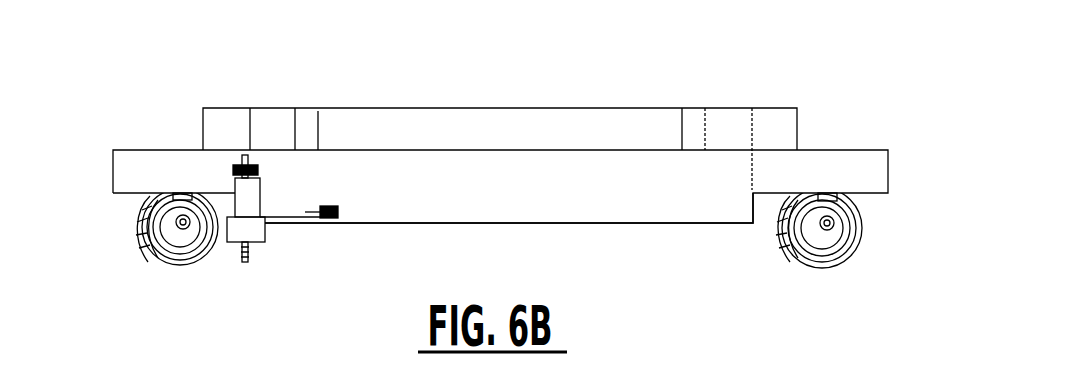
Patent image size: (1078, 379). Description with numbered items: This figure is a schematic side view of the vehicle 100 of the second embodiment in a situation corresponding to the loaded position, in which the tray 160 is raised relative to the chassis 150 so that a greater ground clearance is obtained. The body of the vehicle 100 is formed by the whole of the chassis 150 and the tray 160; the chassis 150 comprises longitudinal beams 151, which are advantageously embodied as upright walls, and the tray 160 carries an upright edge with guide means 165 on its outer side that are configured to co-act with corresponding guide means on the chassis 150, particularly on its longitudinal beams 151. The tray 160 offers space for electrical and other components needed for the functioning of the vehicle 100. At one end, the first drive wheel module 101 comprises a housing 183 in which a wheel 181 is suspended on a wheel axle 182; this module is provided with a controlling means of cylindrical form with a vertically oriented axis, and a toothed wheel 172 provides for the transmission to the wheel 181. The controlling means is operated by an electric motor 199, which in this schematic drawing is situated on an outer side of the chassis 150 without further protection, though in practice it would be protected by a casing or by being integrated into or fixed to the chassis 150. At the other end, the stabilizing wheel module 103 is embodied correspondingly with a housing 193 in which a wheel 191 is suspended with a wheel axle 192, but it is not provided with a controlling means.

The vehicle 100 is at (112, 112).
The first drive wheel module 101 is at (165, 271).
The stabilizing wheel module 103 is at (851, 206).
The chassis 150 is at (668, 236).
The longitudinal beams 151 is at (562, 202).
The tray 160 is at (537, 127).
The guide means 165 is at (312, 130).
The toothed wheel 172 is at (262, 168).
The wheel 181 is at (180, 264).
The wheel axle 182 is at (180, 226).
The housing 183 is at (202, 207).
The wheel 191 is at (837, 266).
The wheel axle 192 is at (830, 222).
The housing 193 is at (812, 208).
The electric motor 199 is at (310, 220).